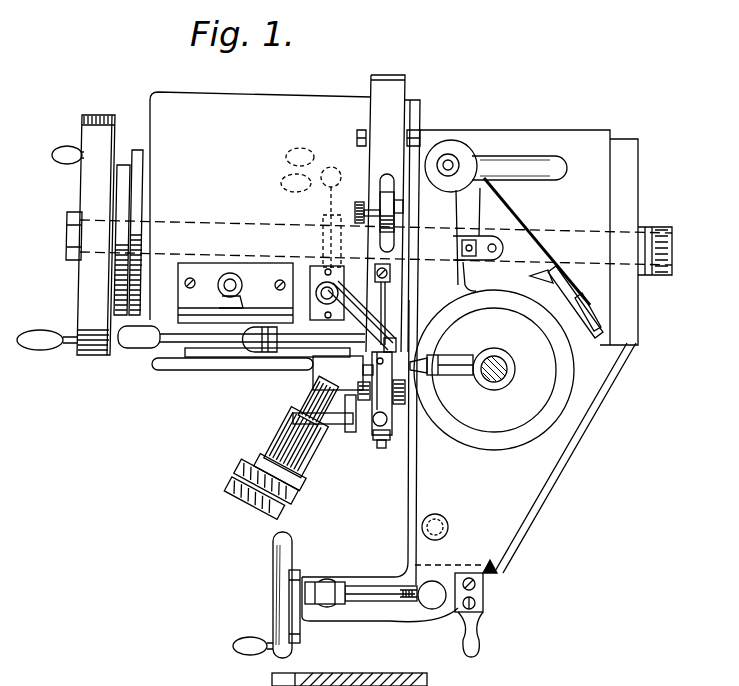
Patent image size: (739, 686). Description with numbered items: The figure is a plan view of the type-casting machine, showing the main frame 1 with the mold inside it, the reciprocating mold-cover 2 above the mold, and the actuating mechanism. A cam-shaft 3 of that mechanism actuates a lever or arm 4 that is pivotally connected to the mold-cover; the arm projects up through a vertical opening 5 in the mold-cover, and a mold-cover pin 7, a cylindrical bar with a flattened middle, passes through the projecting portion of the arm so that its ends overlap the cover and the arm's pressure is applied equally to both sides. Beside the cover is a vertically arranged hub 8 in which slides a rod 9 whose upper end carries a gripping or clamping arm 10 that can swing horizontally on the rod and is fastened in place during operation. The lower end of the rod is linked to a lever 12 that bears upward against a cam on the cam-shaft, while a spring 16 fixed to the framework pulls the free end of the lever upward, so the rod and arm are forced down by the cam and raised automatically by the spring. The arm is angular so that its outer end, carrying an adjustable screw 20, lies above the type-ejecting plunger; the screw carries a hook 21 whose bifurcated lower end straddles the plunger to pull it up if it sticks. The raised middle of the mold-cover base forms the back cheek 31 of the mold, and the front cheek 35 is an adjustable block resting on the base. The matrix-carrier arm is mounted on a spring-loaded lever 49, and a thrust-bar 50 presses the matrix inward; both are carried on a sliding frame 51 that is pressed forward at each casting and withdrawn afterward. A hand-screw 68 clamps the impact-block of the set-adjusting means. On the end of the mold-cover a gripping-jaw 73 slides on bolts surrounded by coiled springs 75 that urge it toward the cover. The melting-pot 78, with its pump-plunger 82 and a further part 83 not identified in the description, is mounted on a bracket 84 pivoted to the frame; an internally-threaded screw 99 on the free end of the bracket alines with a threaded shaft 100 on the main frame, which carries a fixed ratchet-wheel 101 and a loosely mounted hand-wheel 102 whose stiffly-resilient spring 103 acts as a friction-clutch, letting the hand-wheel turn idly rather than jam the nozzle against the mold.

The main frame 1 is at (214, 181).
The reciprocating mold-cover 2 is at (361, 330).
The cam-shaft 3 is at (70, 232).
The lever or arm 4 is at (380, 198).
The vertical opening 5 is at (380, 180).
The mold-cover pin 7 is at (355, 211).
The hub 8 is at (316, 288).
The rod 9 is at (326, 282).
The gripping or clamping arm 10 is at (386, 334).
The lever 12 is at (328, 199).
The spring 16 is at (328, 170).
The adjustable screw 20 is at (376, 423).
The hook 21 is at (379, 443).
The back cheek 31 is at (349, 669).
The front cheek 35 is at (402, 678).
The lever 49 is at (160, 366).
The thrust-bar 50 is at (235, 351).
The sliding frame 51 is at (218, 350).
The hand-screw 68 is at (318, 397).
The gripping-jaw 73 is at (365, 368).
The coiled spring 75 is at (400, 393).
The melting-pot 78 is at (494, 370).
The pump-plunger 82 is at (498, 364).
The key 83 is at (440, 366).
The bracket 84 is at (500, 516).
The internally-threaded screw 99 is at (483, 587).
The threaded shaft 100 is at (390, 602).
The ratchet-wheel 101 is at (297, 626).
The hand-wheel 102 is at (275, 582).
The stiffly-resilient spring 103 is at (297, 580).